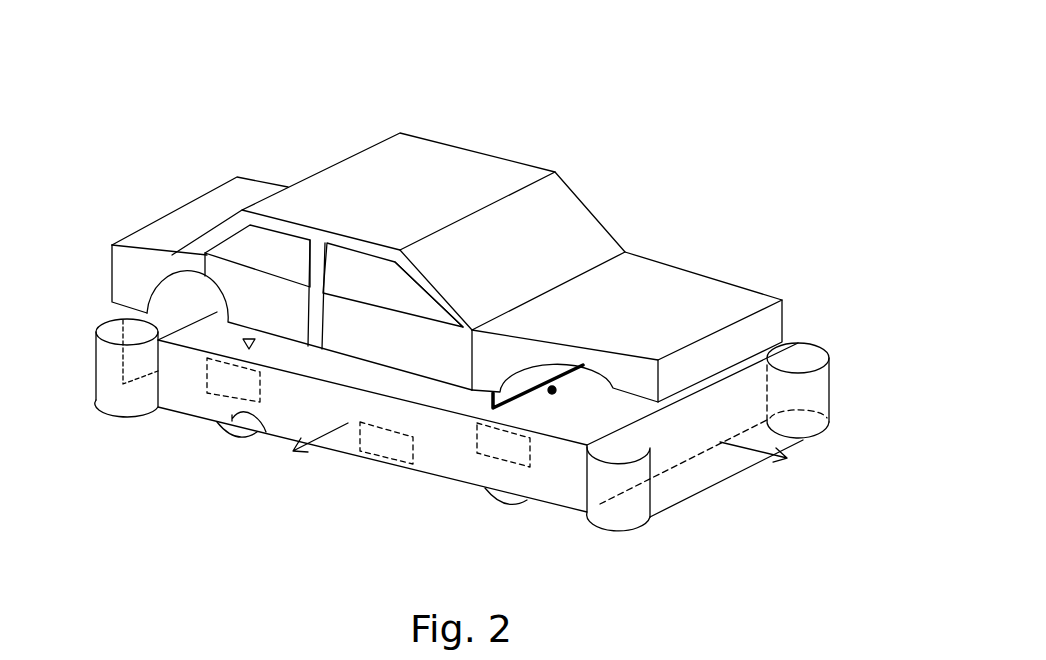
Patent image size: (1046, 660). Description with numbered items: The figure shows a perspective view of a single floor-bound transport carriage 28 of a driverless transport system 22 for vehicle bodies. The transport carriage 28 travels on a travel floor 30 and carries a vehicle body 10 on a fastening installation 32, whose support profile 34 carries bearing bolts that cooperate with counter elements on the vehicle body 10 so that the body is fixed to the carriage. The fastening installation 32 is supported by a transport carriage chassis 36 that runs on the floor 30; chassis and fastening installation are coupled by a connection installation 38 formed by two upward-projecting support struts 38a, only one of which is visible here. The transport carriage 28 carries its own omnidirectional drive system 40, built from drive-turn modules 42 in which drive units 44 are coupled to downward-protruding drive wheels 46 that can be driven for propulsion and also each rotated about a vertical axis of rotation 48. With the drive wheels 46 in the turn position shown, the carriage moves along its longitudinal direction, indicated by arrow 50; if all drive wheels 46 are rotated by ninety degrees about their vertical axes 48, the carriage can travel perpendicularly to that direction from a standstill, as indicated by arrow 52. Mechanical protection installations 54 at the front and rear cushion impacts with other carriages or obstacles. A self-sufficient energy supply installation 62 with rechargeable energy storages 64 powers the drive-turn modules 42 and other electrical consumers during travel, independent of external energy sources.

The vehicle body 10 is at (393, 160).
The transport system 22 is at (664, 97).
The transport carriage 28 is at (690, 508).
The travel floor 30 is at (357, 581).
The fastening installation 32 is at (233, 342).
The support profile 34 is at (578, 366).
The transport carriage chassis 36 is at (460, 460).
The connection installation 38 is at (563, 395).
The support strut 38a is at (620, 395).
The drive system 40 is at (203, 400).
The drive-turn module 42 is at (269, 384).
The drive unit 44 is at (241, 391).
The drive wheel 46 is at (231, 434).
The vertical axis of rotation 48 is at (266, 432).
The arrow indicating longitudinal direction 50 is at (803, 443).
The arrow indicating perpendicular travel 52 is at (108, 365).
The mechanical protection installation 54 is at (94, 316).
The energy supply installation 62 is at (370, 449).
The rechargeable energy storage 64 is at (392, 453).